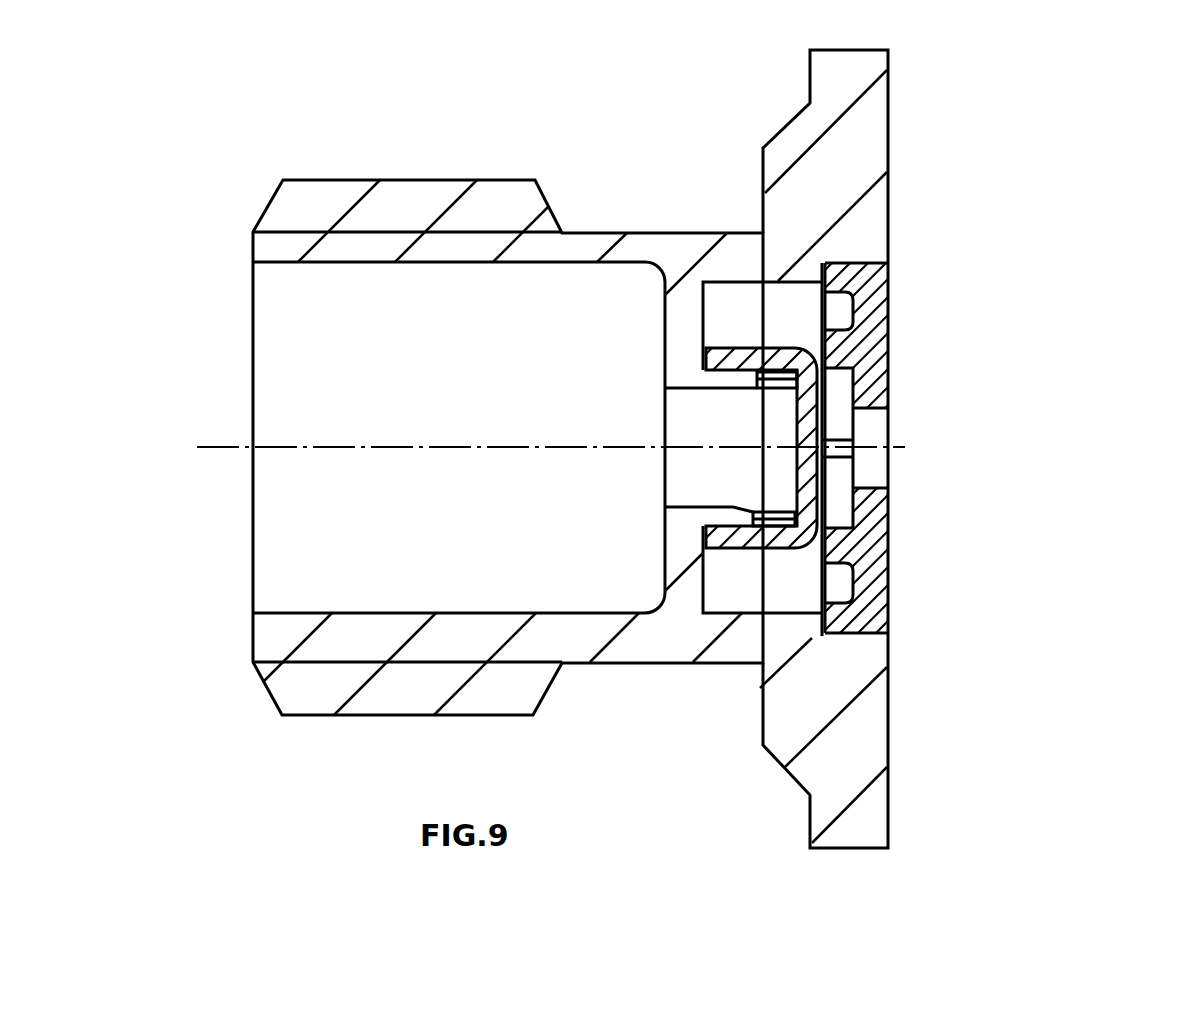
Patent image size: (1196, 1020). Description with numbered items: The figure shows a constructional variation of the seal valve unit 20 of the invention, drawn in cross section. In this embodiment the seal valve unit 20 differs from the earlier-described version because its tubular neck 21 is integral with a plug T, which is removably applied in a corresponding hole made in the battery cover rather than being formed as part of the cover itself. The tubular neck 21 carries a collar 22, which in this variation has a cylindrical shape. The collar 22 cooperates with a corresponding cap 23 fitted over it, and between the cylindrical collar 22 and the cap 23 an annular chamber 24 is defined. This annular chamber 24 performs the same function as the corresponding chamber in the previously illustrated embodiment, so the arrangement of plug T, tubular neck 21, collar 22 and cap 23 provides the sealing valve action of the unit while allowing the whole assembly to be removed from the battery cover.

The plug T is at (487, 150).
The seal valve unit 20 is at (775, 588).
The tubular neck 21 is at (722, 377).
The collar 22 is at (753, 385).
The cap 23 is at (805, 477).
The annular chamber 24 is at (770, 517).